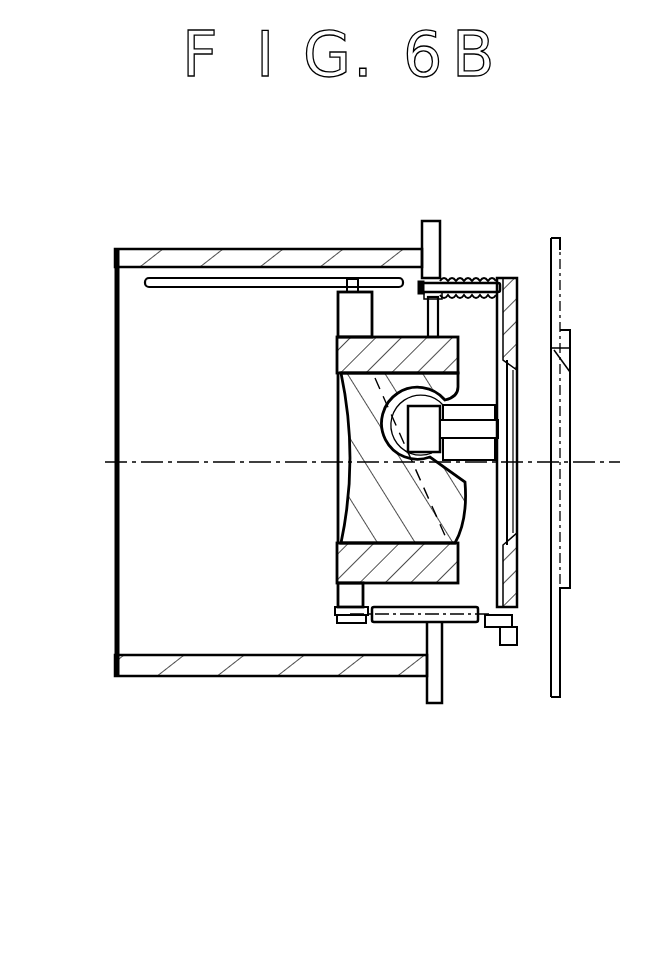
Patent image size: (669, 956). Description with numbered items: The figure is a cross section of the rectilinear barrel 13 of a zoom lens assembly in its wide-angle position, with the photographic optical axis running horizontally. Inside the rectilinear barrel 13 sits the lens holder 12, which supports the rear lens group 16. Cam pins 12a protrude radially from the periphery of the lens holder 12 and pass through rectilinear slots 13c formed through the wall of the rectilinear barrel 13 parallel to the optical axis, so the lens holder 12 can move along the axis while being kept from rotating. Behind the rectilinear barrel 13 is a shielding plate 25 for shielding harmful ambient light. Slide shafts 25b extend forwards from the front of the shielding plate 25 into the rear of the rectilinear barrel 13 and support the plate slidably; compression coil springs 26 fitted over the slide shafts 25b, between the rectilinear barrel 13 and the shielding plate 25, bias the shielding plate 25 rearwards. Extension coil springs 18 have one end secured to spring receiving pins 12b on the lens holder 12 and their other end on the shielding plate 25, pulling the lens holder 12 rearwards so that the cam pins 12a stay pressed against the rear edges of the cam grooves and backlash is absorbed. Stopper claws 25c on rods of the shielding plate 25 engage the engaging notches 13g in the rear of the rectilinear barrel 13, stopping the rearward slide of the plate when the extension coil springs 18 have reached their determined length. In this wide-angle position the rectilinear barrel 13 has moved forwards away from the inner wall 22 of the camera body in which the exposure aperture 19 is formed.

The lens holder 12 is at (335, 544).
The cam pins 12a is at (352, 284).
The spring receiving pins 12b is at (345, 600).
The rectilinear barrel 13 is at (162, 249).
The rectilinear slots 13c is at (180, 292).
The engaging notches 13g is at (440, 458).
The rear lens group 16 is at (355, 427).
The extension coil springs 18 is at (372, 625).
The exposure aperture 19 is at (566, 368).
The inner wall 22 is at (557, 247).
The shielding plate 25 is at (501, 279).
The slide shafts 25b is at (420, 288).
The stopper claws 25c is at (470, 407).
The compression coil springs 26 is at (470, 279).